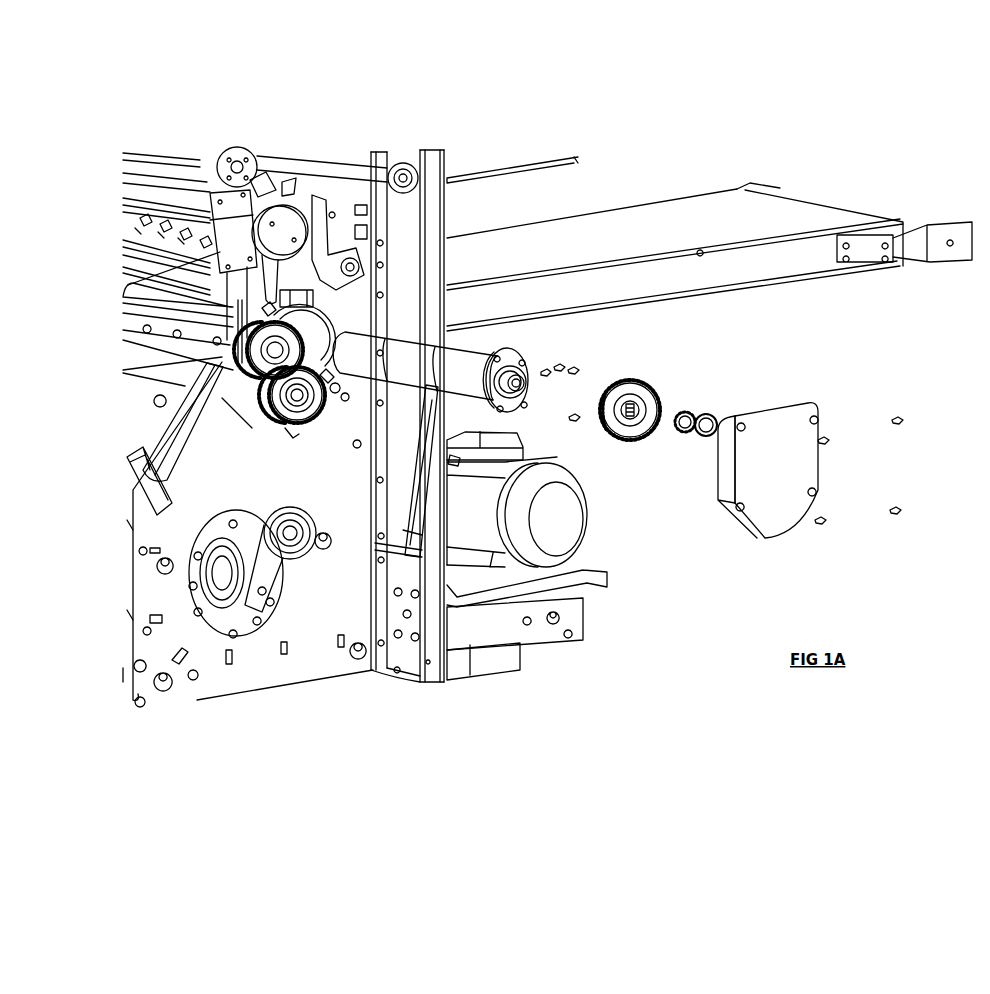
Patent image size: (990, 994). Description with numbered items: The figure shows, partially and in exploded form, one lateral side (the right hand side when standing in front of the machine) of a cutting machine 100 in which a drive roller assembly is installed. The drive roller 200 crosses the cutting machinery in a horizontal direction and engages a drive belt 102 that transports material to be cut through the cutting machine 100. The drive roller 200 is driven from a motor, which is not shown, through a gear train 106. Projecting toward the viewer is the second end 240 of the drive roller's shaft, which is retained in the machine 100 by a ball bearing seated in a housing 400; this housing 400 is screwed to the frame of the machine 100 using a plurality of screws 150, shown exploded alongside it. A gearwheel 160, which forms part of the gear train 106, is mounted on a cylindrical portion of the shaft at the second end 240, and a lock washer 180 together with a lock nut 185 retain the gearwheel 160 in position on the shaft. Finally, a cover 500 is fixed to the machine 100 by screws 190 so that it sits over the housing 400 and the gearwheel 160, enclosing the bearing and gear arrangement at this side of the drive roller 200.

The cutting machine 100 is at (283, 427).
The drive belt 102 is at (709, 244).
The gear train 106 is at (262, 405).
The screws 150 is at (578, 370).
The gearwheel 160 is at (645, 384).
The lock washer 180 is at (690, 410).
The lock nut 185 is at (712, 410).
The screws 190 is at (900, 415).
The drive roller 200 is at (363, 370).
The second end 240 is at (527, 393).
The housing 400 is at (523, 357).
The cover 500 is at (802, 430).